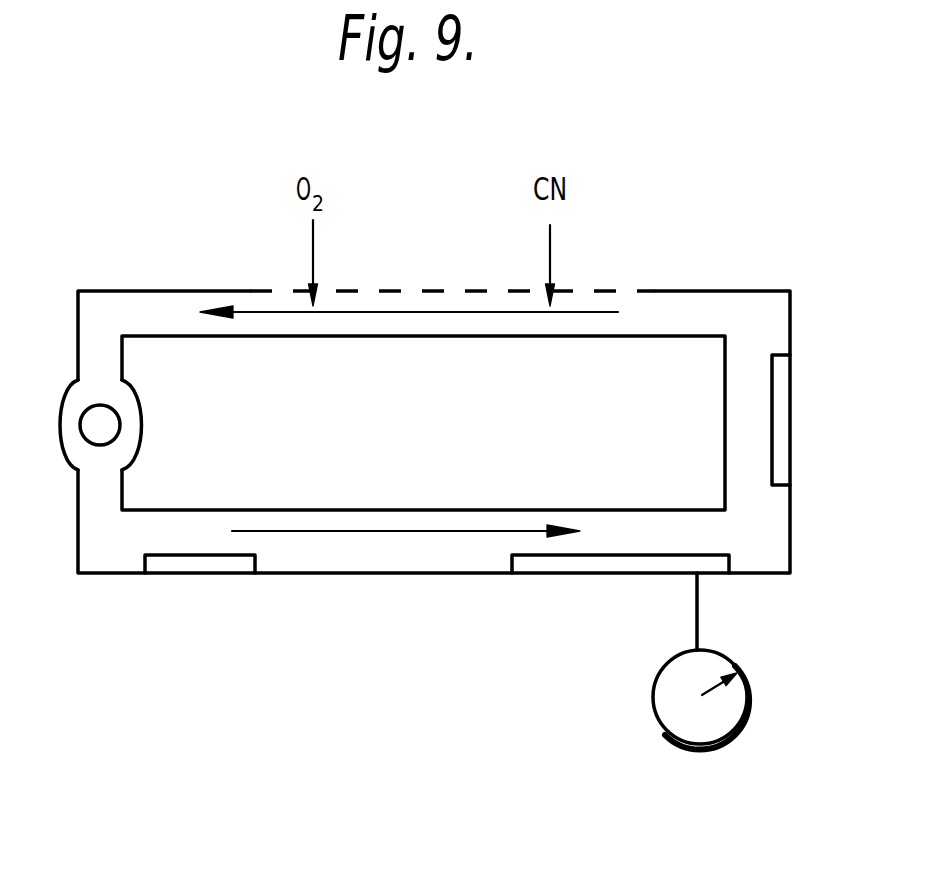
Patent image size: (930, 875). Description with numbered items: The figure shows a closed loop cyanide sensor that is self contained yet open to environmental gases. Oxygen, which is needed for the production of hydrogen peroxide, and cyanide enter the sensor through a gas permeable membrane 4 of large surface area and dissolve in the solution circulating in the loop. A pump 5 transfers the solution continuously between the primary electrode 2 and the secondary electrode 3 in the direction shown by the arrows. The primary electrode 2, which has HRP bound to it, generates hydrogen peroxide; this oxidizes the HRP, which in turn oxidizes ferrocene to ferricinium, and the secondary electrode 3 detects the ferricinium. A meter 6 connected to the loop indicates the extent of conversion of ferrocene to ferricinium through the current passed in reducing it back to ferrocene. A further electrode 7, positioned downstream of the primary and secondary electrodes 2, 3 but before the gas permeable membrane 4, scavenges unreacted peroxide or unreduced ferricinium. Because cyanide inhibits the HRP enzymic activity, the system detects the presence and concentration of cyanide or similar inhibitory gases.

The primary electrode 2 is at (196, 582).
The secondary electrode 3 is at (564, 582).
The gas permeable membrane 4 is at (387, 288).
The pump 5 is at (95, 422).
The meter 6 is at (740, 655).
The further electrode 7 is at (800, 411).